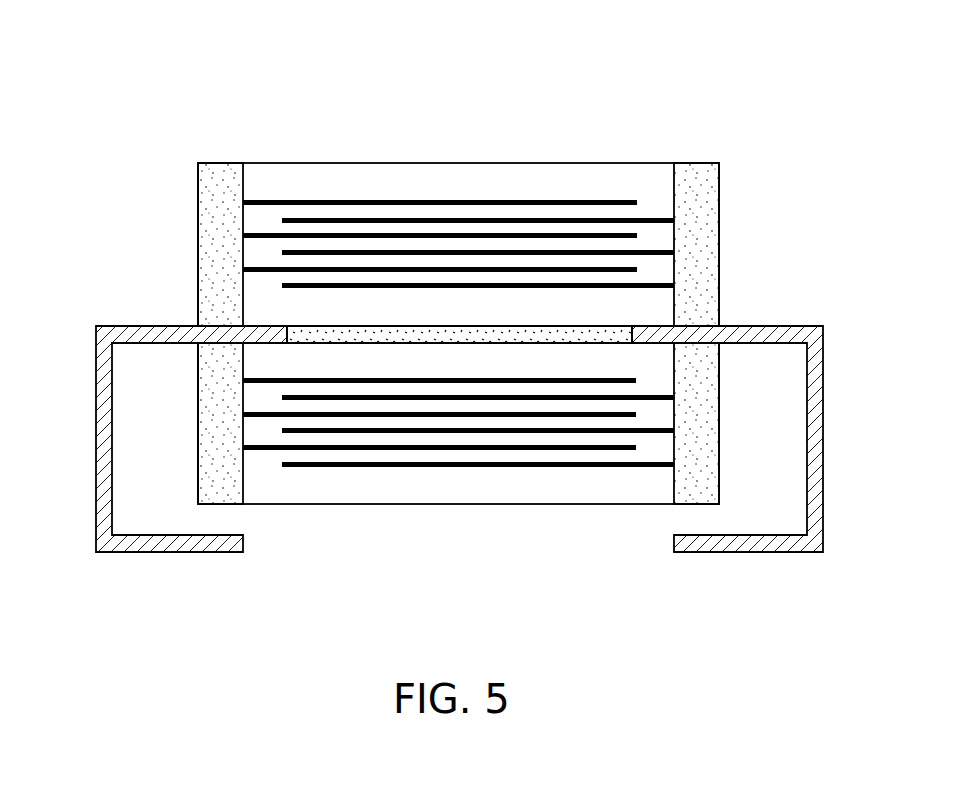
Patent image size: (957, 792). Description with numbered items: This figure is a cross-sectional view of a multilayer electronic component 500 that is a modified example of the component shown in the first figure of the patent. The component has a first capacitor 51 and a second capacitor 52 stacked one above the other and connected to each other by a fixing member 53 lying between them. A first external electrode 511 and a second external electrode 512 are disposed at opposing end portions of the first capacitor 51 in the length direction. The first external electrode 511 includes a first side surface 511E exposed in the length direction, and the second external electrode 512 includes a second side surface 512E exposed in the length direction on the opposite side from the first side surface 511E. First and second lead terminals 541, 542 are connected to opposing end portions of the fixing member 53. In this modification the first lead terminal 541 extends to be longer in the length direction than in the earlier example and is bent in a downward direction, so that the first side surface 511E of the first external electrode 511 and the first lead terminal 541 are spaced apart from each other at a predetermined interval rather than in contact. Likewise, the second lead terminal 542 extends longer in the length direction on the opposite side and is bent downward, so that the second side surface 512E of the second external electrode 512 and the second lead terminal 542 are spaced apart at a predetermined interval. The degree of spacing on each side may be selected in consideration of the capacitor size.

The electronic component (multilayer capacitor assembly) 500 is at (652, 47).
The first capacitor 51 is at (526, 524).
The second capacitor 52 is at (362, 172).
The fixing member 53 is at (594, 333).
The first external electrode 511 is at (226, 496).
The second external electrode 512 is at (700, 496).
The first side surface 511E is at (198, 402).
The second side surface 512E is at (722, 378).
The first lead terminal 541 is at (97, 440).
The second lead terminal 542 is at (821, 437).